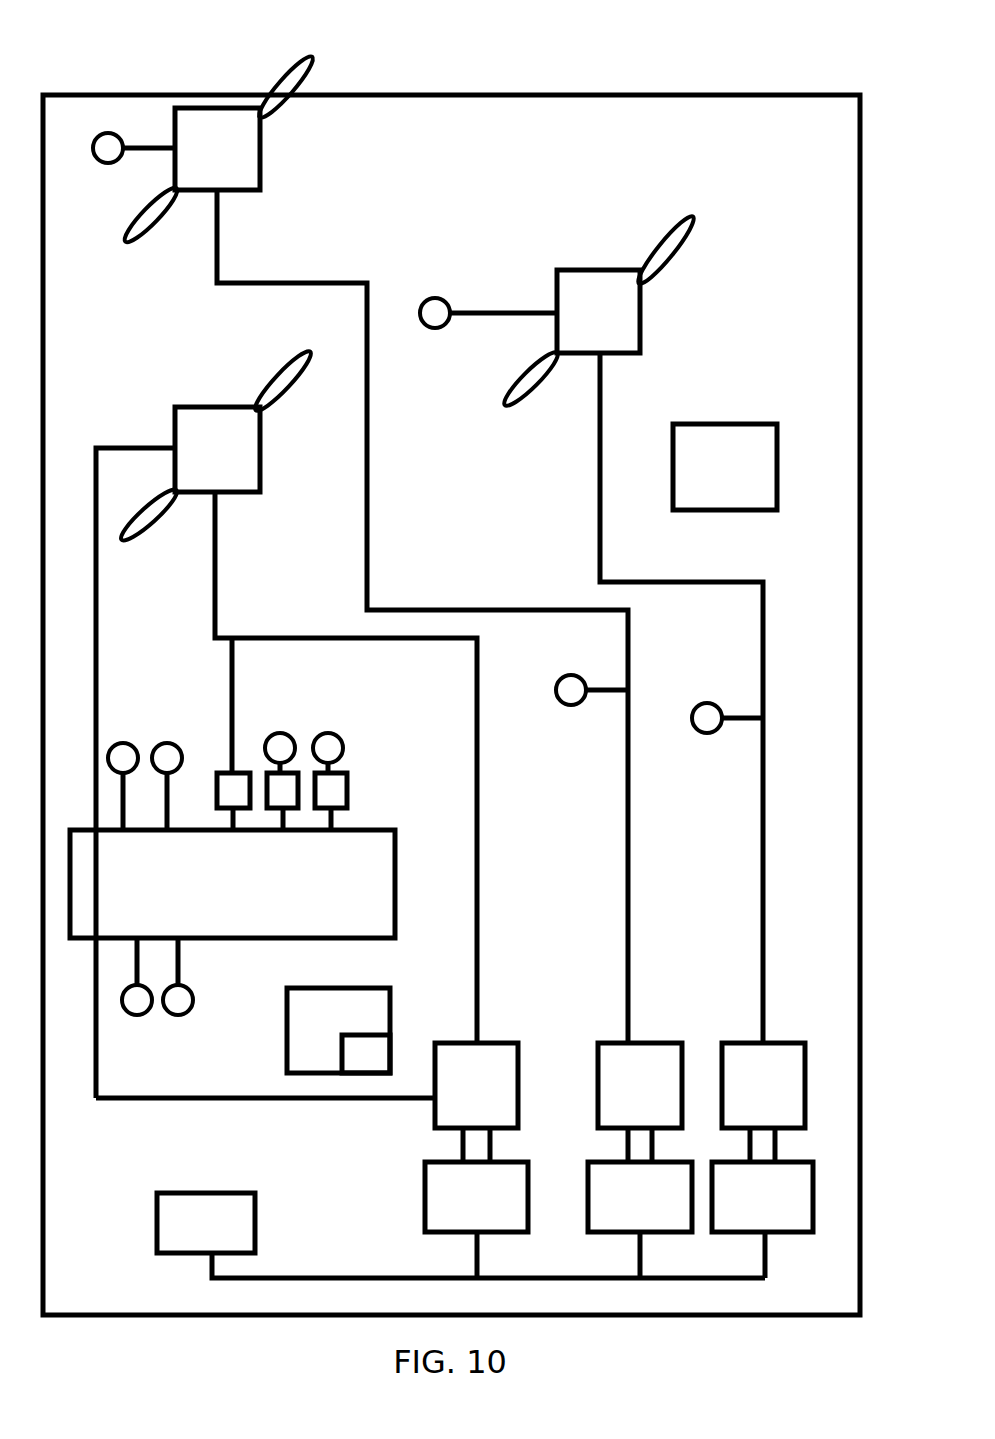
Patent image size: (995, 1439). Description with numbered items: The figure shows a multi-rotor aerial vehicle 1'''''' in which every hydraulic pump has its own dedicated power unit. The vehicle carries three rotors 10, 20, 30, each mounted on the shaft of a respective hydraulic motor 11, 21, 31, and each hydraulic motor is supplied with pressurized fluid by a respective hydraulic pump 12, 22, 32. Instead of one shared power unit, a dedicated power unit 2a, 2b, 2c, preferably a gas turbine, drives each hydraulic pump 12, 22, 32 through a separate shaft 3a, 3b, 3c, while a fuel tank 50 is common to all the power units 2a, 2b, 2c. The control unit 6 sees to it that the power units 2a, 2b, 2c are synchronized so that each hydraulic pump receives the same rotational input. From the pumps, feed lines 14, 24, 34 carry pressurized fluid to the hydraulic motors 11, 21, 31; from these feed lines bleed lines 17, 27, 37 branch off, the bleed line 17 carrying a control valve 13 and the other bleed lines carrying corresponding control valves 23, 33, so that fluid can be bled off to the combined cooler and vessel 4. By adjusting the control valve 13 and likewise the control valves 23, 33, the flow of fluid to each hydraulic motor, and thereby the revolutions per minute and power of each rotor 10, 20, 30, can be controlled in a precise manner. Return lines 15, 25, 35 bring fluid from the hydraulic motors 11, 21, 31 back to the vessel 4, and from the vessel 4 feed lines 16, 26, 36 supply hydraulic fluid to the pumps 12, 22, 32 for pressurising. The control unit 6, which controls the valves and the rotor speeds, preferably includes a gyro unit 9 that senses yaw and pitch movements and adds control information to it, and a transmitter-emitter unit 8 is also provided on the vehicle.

The multi-rotor aerial vehicle 1'''''' is at (451, 669).
The rotor 10 is at (256, 388).
The hydraulic motor 11 is at (217, 449).
The hydraulic pump 12 is at (476, 1085).
The control valve 13 is at (232, 790).
The fluid line 14 is at (474, 890).
The return line of fluid 15 is at (100, 635).
The feed line of hydraulic fluid 16 is at (260, 1102).
The bleed line 17 is at (228, 700).
The rotor 20 is at (273, 78).
The hydraulic motor 21 is at (217, 149).
The hydraulic pump 22 is at (640, 1085).
The second current sensor 23 is at (283, 790).
The feed line 24 is at (626, 985).
The return line of fluid 25 is at (110, 134).
The feed line of hydraulic fluid 26 is at (140, 1013).
The bleed line 27 is at (571, 705).
The rotor 30 is at (645, 250).
The hydraulic motor 31 is at (598, 311).
The hydraulic pump 32 is at (763, 1085).
The third current sensor 33 is at (330, 790).
The feed line 34 is at (760, 958).
The return line of fluid 35 is at (428, 298).
The feed line of hydraulic fluid 36 is at (195, 990).
The bleed line 37 is at (707, 703).
The power unit 2a is at (476, 1220).
The power unit 2b is at (640, 1220).
The power unit 2c is at (762, 1220).
The shaft 3a is at (460, 1145).
The shaft 3b is at (622, 1143).
The shaft 3c is at (780, 1138).
The combined cooler and vessel 4 is at (232, 884).
The control unit 6 is at (338, 1030).
The transmitter-emitter unit 8 is at (725, 467).
The gyro unit 9 is at (366, 1054).
The fuel tank 50 is at (461, 1235).